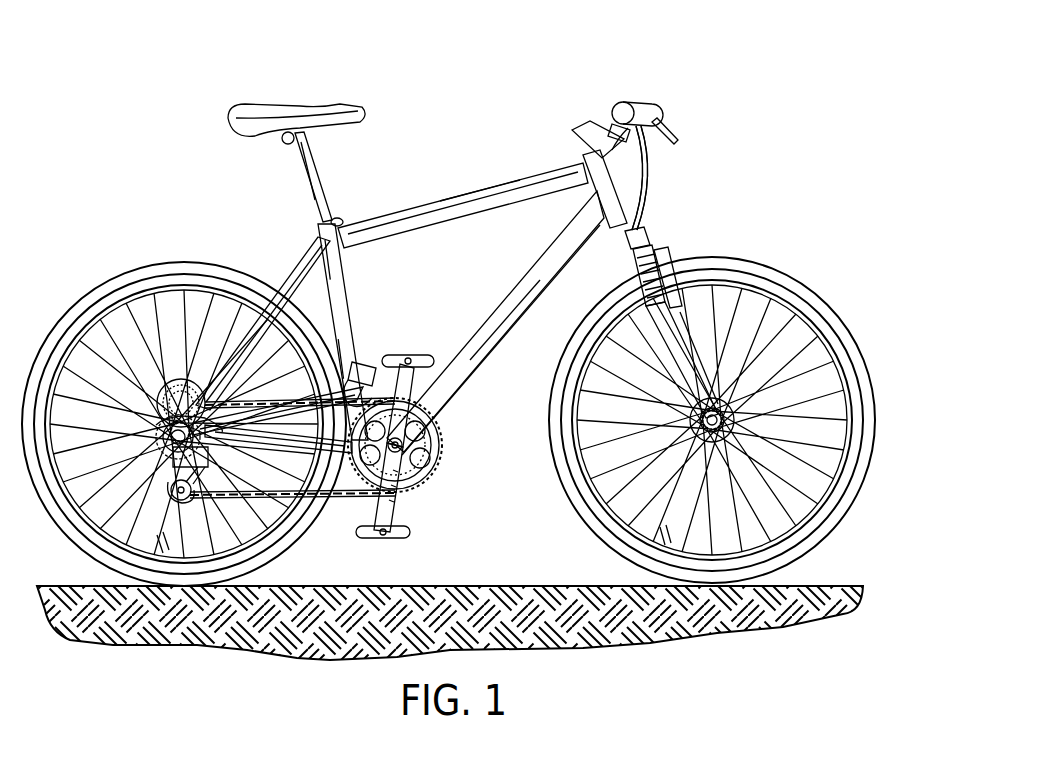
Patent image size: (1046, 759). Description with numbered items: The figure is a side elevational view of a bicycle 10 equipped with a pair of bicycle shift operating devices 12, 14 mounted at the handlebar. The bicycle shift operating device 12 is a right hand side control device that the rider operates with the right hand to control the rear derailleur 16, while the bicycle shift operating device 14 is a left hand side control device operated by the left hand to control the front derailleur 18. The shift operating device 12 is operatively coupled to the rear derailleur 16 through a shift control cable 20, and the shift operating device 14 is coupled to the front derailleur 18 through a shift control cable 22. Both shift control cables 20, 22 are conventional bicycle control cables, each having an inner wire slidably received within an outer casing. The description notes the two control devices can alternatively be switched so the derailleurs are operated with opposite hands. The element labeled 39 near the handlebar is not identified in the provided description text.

The bicycle 10 is at (448, 305).
The bicycle shift operating device 12 is at (630, 151).
The bicycle shift operating device 14 is at (640, 178).
The rear derailleur 16 is at (176, 522).
The front derailleur 18 is at (368, 353).
The shift control cable 20 is at (480, 374).
The shift control cable 22 is at (472, 195).
The handlebar 39 is at (650, 110).